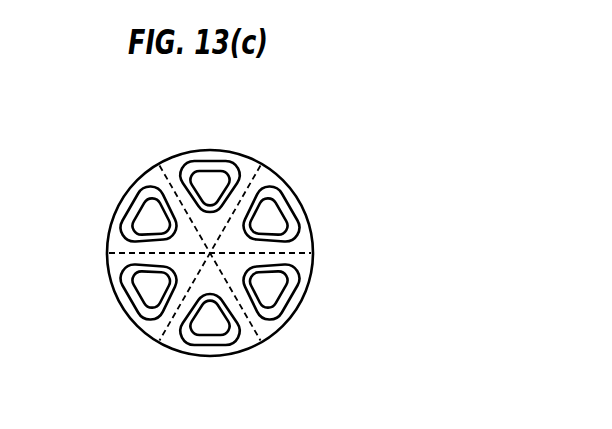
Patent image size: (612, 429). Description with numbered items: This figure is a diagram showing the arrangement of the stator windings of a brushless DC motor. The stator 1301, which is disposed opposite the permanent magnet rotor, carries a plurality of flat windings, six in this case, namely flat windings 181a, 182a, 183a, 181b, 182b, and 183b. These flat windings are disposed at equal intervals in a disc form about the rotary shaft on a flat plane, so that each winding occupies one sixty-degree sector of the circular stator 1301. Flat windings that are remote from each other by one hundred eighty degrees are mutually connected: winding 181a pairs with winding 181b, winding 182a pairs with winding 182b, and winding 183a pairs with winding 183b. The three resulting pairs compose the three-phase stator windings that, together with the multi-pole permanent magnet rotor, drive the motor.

The stator 1301 is at (313, 258).
The flat winding 181a is at (215, 162).
The flat winding 181b is at (203, 342).
The flat winding 182a is at (130, 202).
The flat winding 182b is at (287, 305).
The flat winding 183a is at (146, 317).
The flat winding 183b is at (290, 199).